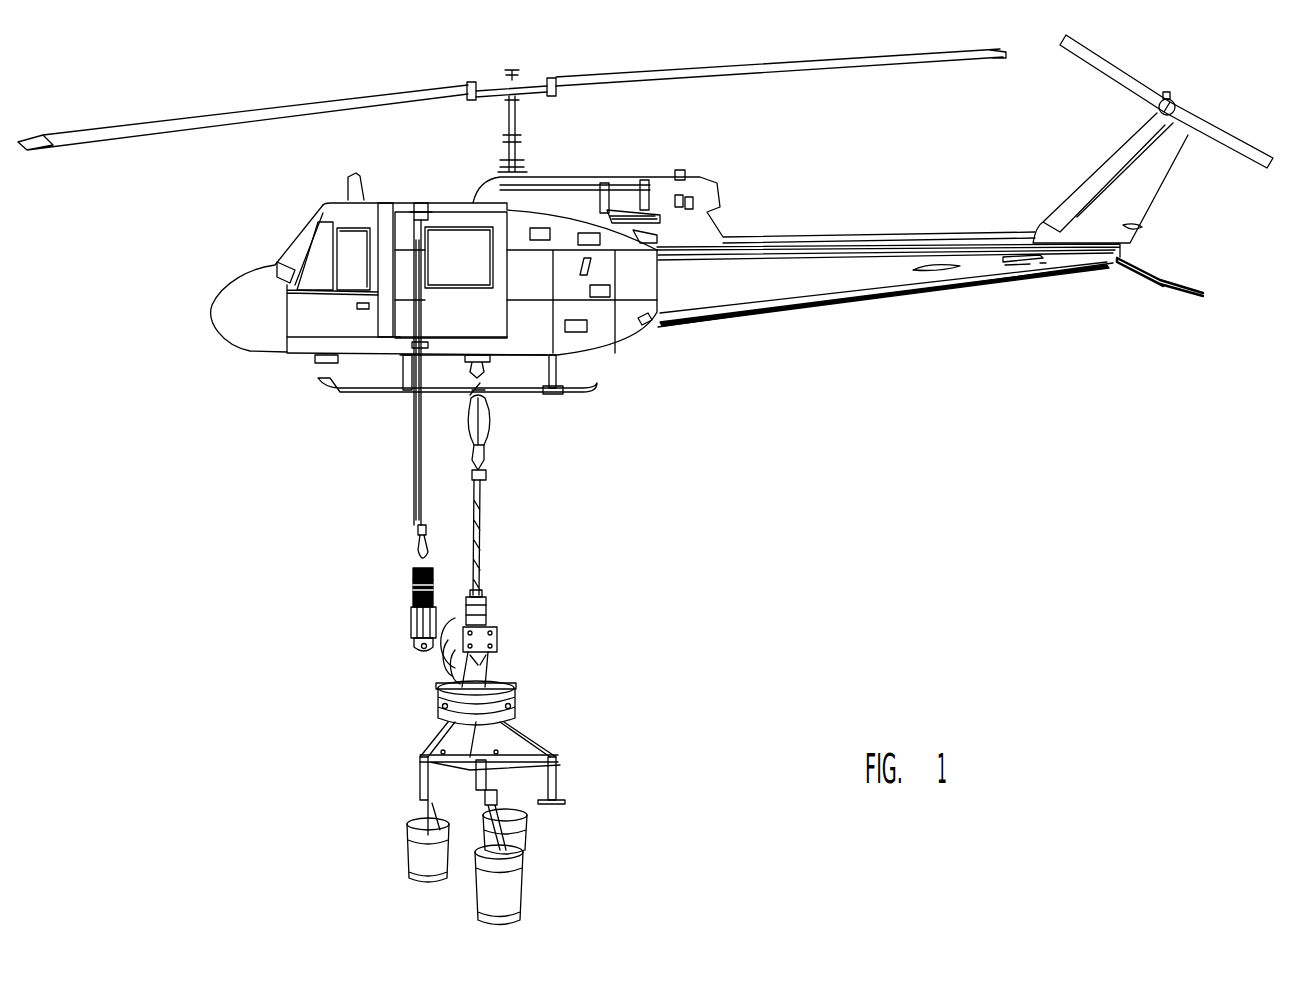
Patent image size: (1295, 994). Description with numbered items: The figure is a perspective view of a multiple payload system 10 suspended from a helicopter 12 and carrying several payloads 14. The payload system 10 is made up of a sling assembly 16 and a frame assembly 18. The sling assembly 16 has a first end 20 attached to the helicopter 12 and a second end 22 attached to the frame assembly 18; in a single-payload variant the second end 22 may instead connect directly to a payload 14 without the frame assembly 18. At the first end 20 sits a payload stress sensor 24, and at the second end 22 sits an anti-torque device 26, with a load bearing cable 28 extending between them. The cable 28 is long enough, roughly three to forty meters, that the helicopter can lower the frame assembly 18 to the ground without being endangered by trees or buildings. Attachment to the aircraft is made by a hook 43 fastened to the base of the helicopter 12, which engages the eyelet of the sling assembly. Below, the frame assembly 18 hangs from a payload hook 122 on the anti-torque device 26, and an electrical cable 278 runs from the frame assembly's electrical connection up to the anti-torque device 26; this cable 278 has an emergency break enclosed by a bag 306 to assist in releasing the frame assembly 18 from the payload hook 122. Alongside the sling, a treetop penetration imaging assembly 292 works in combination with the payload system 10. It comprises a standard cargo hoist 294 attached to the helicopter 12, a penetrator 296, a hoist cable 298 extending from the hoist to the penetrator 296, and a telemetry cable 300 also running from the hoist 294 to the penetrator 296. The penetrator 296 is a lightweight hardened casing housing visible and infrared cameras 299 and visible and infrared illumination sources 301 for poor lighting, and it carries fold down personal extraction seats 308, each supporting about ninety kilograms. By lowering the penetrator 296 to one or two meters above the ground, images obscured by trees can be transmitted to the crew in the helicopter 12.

The multiple payload system 10 is at (576, 579).
The helicopter 12 is at (737, 214).
The payloads 14 is at (488, 928).
The sling assembly 16 is at (485, 531).
The frame assembly 18 is at (544, 725).
The first end 20 is at (505, 407).
The second end 22 is at (504, 607).
The payload stress sensor 24 is at (489, 420).
The anti-torque device 26 is at (488, 612).
The load bearing cable 28 is at (480, 488).
The hook 43 is at (492, 364).
The payload hook 122 is at (492, 642).
The electrical cable 278 is at (440, 695).
The treetop penetration imaging assembly 292 is at (405, 551).
The cargo hoist 294 is at (423, 203).
The penetrator 296 is at (411, 597).
The hoist cable 298 is at (414, 470).
The visible and infrared cameras 299 is at (442, 650).
The telemetry cable 300 is at (413, 413).
The visible and infrared illumination sources 301 is at (412, 575).
The bag 306 is at (452, 655).
The fold down personal extraction seats 308 is at (441, 630).